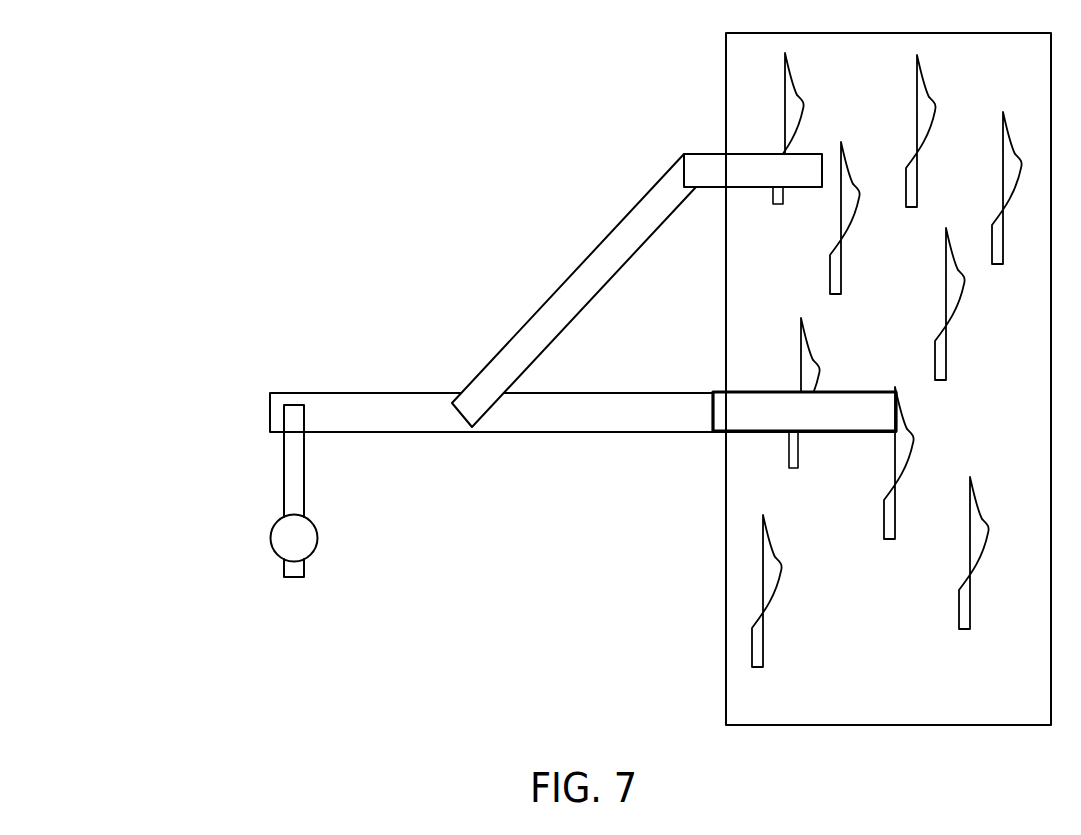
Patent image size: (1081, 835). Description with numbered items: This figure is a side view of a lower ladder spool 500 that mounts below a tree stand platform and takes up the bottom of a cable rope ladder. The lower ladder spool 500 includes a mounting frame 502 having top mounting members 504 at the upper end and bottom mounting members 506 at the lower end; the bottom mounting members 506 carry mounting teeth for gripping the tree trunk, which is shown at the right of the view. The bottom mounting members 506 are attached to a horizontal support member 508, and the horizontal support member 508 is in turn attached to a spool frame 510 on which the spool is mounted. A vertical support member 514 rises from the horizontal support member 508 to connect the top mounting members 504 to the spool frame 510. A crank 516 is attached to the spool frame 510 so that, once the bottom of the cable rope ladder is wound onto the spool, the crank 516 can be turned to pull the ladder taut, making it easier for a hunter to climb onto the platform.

The lower ladder spool 500 is at (619, 130).
The mounting frame 502 is at (541, 322).
The top mounting members 504 is at (700, 160).
The bottom mounting members 506 is at (722, 418).
The horizontal support member 508 is at (524, 417).
The spool frame 510 is at (341, 405).
The vertical support member 514 is at (565, 312).
The crank 516 is at (284, 492).